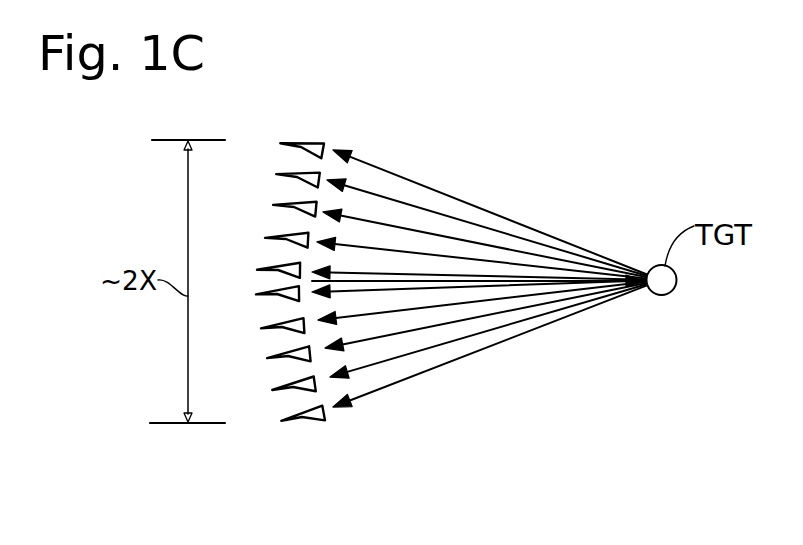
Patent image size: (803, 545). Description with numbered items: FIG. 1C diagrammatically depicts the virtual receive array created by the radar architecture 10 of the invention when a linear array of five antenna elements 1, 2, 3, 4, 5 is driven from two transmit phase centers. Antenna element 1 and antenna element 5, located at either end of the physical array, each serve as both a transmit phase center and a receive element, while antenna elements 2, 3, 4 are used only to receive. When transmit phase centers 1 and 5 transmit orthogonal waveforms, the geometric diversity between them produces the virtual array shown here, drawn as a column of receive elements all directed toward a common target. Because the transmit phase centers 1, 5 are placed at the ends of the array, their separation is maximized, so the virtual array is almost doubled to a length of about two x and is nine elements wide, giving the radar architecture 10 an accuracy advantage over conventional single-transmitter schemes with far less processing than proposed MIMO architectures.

The antenna element 1 is at (258, 270).
The antenna element 2 is at (265, 238).
The antenna element 3 is at (274, 203).
The antenna element 4 is at (277, 172).
The antenna element 5 is at (297, 141).
The radar architecture 10 is at (640, 143).